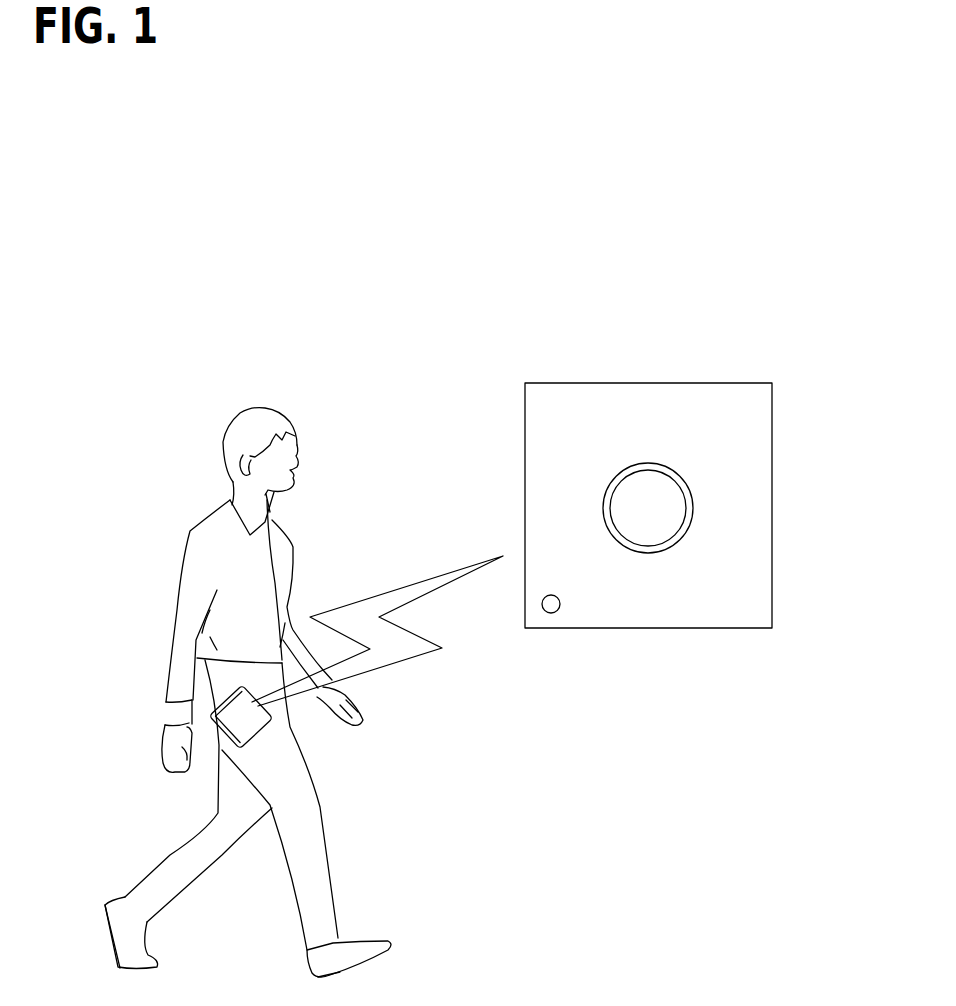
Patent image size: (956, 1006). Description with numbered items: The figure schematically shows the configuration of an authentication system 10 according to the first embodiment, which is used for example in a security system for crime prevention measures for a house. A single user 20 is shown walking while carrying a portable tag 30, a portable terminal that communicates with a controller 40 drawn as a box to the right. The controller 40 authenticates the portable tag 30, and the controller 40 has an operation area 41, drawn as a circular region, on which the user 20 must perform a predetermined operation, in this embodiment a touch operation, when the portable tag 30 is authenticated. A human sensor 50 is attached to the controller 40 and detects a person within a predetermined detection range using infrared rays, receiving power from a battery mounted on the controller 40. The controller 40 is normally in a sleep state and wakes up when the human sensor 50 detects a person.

The authentication system 10 is at (449, 243).
The user 20 is at (258, 408).
The portable tag 30 is at (250, 730).
The controller 40 is at (643, 382).
The operation area 41 is at (668, 507).
The human sensor 50 is at (551, 613).